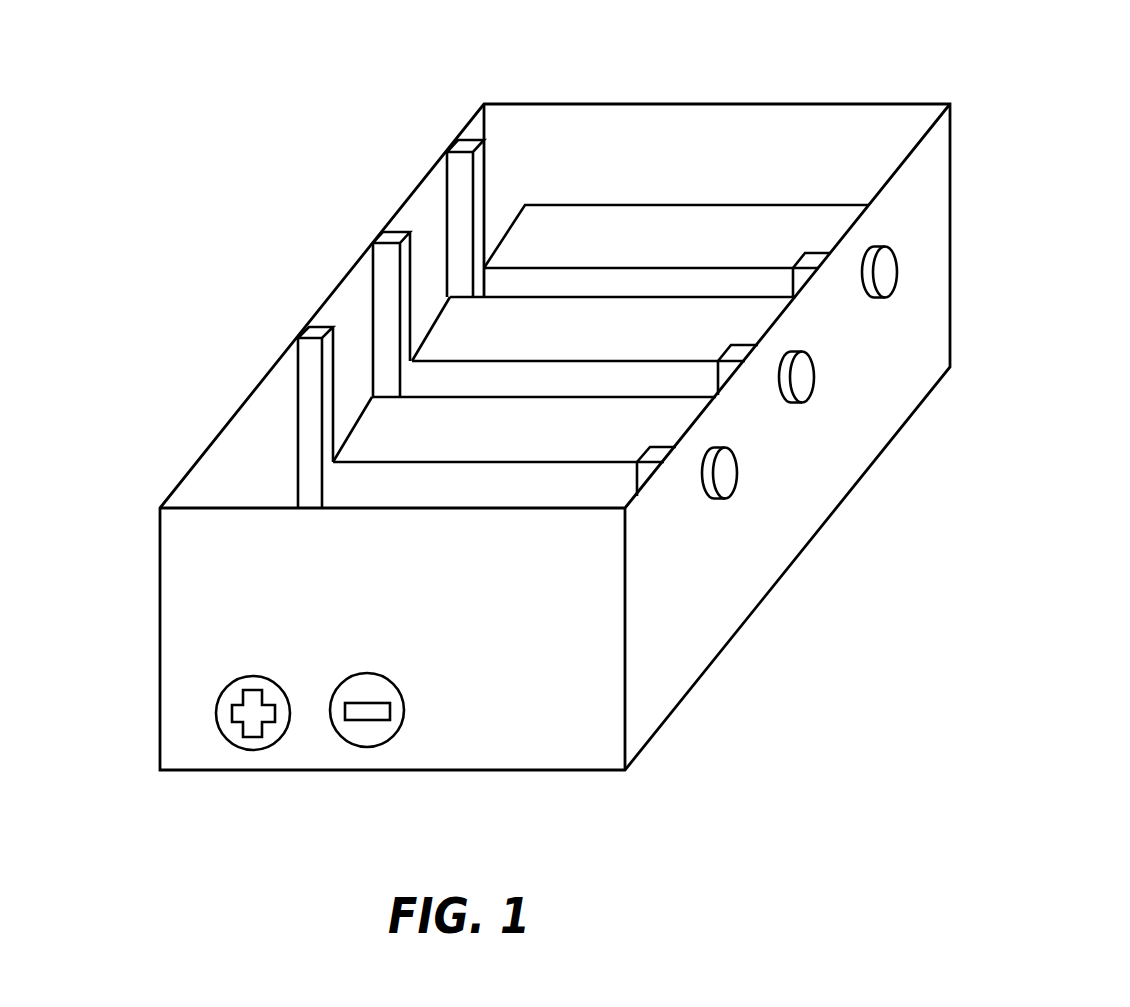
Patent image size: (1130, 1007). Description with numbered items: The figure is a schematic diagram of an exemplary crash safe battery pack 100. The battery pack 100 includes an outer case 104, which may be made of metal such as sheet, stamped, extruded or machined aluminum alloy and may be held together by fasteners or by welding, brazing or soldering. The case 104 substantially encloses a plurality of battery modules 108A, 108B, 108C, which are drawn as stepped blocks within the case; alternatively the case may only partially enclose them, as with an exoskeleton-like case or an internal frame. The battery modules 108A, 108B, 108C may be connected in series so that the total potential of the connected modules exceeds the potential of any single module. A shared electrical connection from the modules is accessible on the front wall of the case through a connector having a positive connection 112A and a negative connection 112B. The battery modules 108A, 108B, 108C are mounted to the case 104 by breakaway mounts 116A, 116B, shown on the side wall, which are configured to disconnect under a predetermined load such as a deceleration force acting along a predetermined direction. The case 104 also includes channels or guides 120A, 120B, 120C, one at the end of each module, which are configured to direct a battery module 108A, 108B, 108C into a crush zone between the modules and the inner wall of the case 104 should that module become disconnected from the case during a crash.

The battery pack 100 is at (588, 65).
The outer case 104 is at (452, 145).
The battery module 108A is at (532, 405).
The battery module 108B is at (616, 307).
The battery module 108C is at (690, 211).
The positive connection 112A is at (235, 748).
The negative connection 112B is at (360, 748).
The breakaway mount 116A is at (879, 300).
The breakaway mount 116B is at (801, 405).
The channel or guide 120A is at (660, 445).
The channel or guide 120B is at (738, 342).
The channel or guide 120C is at (817, 253).